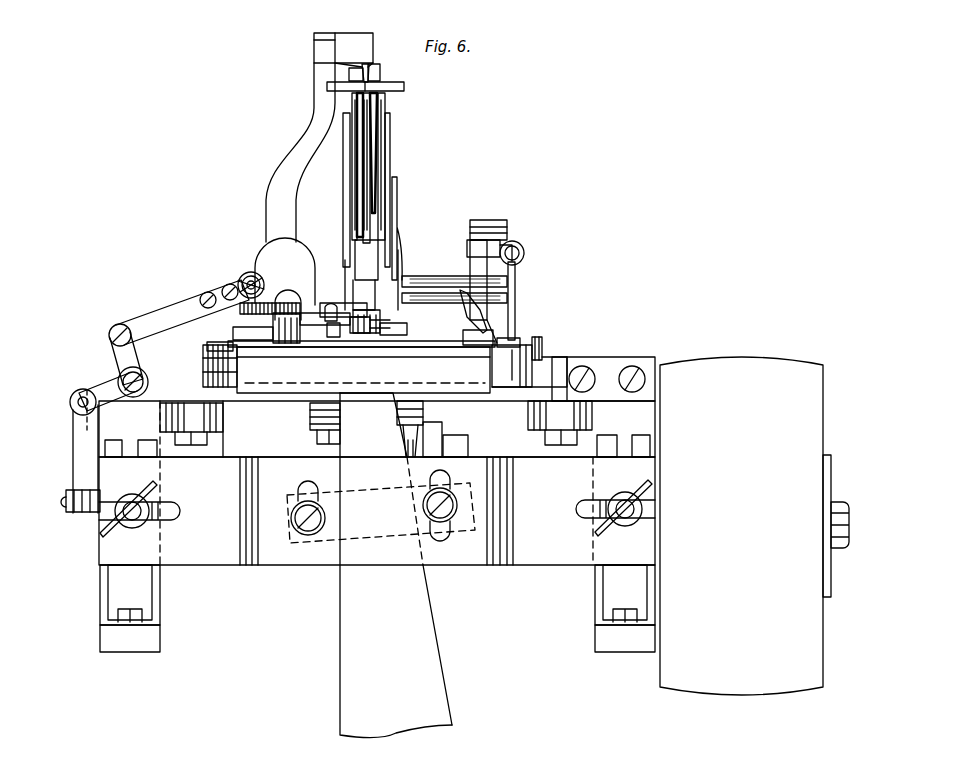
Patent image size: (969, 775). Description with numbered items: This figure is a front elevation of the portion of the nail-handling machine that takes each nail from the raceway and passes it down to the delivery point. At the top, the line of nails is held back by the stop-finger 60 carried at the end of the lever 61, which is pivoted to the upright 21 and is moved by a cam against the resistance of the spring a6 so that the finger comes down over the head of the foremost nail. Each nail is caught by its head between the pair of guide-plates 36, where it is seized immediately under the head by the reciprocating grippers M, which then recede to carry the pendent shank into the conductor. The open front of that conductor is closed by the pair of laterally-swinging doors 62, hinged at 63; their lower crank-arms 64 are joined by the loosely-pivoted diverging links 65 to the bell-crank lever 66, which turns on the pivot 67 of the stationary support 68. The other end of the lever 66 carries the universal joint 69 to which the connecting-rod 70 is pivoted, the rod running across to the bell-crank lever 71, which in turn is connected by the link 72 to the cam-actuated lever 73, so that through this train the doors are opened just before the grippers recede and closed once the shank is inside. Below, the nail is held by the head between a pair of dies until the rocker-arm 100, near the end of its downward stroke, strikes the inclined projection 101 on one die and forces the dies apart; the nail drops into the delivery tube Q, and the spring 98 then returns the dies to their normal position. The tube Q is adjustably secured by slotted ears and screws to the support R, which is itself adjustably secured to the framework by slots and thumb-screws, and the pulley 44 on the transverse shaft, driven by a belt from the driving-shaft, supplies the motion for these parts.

The stop-finger 60 is at (343, 50).
The guide-plates 36 is at (349, 73).
The grippers M is at (406, 86).
The lever 61 is at (270, 171).
The laterally-swinging doors 62 is at (356, 156).
The hinges 63 is at (350, 133).
The upright 21 is at (302, 258).
The universal joint 69 is at (246, 274).
The pivot 67 is at (279, 300).
The bell-crank lever 66 is at (300, 300).
The crank-arms 64 is at (336, 307).
The diverging links 65 is at (410, 329).
The connecting-rod 70 is at (160, 310).
The spring a6 is at (240, 329).
The bell-crank lever 71 is at (103, 384).
The stationary support 68 is at (287, 340).
The spring 98 is at (575, 342).
The link 72 is at (78, 459).
The lever 73 is at (92, 510).
The support R is at (377, 504).
The delivery tube Q is at (396, 565).
The pulley 44 is at (754, 526).
The rocker-arm 100 is at (505, 316).
The inclined projection 101 is at (500, 337).